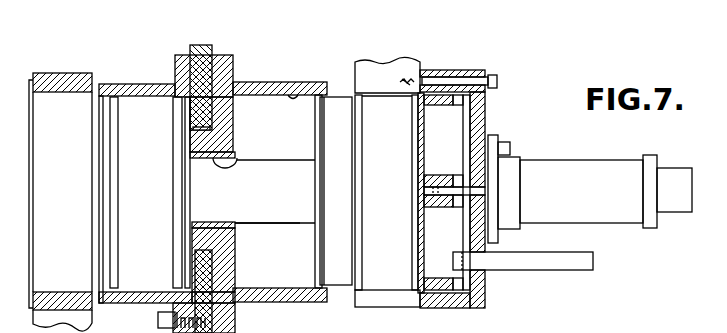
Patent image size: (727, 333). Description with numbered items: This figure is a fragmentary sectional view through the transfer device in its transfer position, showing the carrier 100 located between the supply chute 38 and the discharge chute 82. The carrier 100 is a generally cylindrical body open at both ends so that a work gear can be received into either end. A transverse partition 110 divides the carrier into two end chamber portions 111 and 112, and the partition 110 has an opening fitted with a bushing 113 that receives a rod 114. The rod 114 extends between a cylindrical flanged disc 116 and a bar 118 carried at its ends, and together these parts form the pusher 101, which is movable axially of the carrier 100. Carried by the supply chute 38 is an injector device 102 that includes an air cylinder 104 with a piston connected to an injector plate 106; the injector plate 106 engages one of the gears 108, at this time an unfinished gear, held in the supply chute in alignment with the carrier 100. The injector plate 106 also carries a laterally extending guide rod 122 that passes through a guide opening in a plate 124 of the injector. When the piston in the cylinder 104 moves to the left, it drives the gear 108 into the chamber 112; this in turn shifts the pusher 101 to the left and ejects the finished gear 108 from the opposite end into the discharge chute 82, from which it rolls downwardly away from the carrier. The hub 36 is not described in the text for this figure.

The hub 36 is at (200, 45).
The supply chute 38 is at (390, 78).
The discharge chute 82 is at (72, 73).
The carrier 100 is at (268, 78).
The pusher 101 is at (259, 232).
The injector device 102 is at (468, 66).
The air cylinder 104 is at (583, 162).
The injector plate 106 is at (423, 130).
The gear 108 is at (160, 232).
The transverse partition 110 is at (233, 118).
The end chamber portion 111 is at (145, 84).
The end chamber portion 112 is at (293, 95).
The bushing 113 is at (238, 160).
The rod 114 is at (272, 201).
The cylindrical flanged disc 116 is at (338, 110).
The bar 118 is at (175, 150).
The guide rod 122 is at (557, 268).
The plate 124 is at (483, 286).